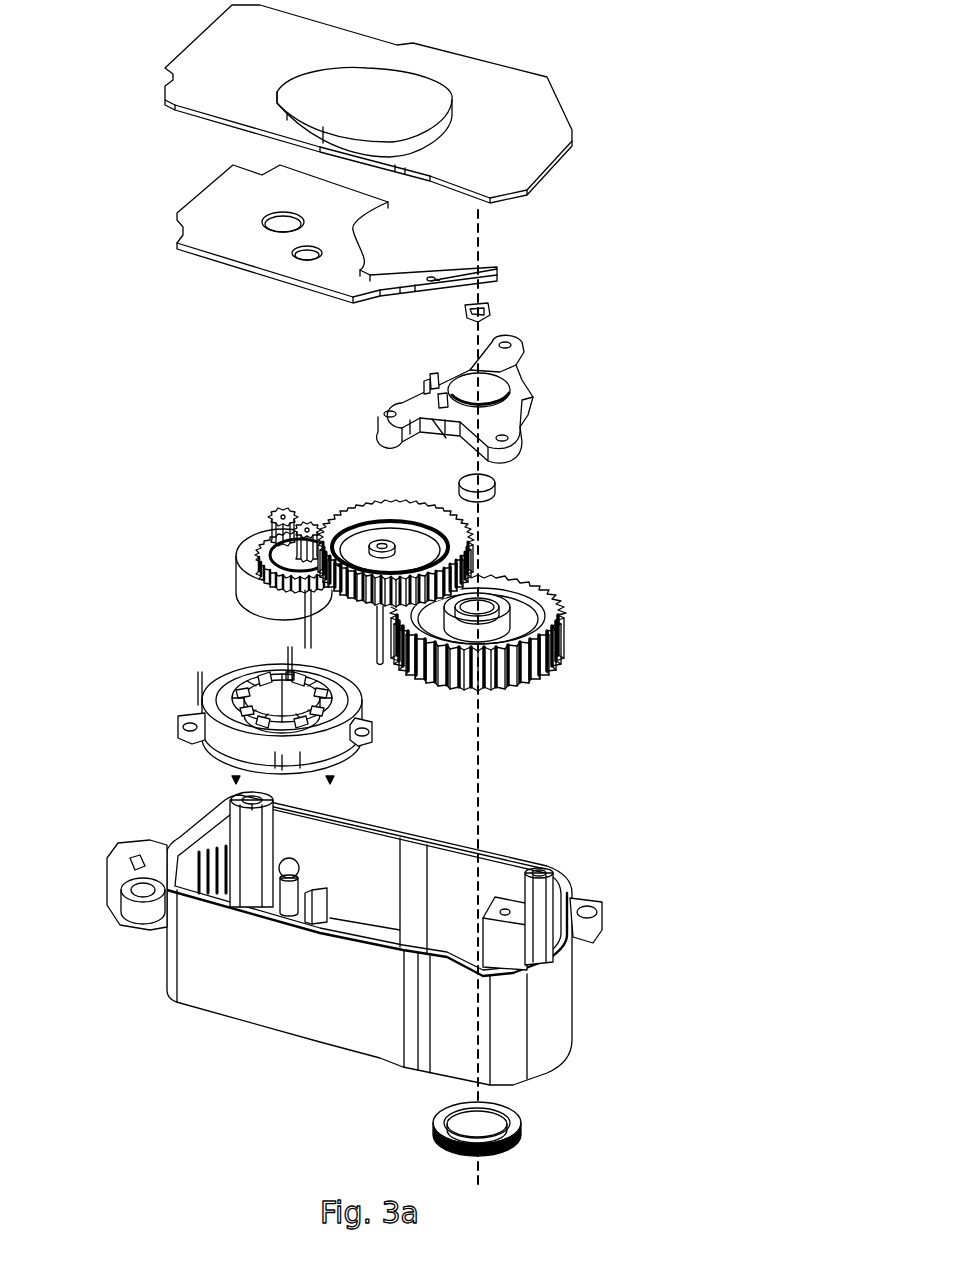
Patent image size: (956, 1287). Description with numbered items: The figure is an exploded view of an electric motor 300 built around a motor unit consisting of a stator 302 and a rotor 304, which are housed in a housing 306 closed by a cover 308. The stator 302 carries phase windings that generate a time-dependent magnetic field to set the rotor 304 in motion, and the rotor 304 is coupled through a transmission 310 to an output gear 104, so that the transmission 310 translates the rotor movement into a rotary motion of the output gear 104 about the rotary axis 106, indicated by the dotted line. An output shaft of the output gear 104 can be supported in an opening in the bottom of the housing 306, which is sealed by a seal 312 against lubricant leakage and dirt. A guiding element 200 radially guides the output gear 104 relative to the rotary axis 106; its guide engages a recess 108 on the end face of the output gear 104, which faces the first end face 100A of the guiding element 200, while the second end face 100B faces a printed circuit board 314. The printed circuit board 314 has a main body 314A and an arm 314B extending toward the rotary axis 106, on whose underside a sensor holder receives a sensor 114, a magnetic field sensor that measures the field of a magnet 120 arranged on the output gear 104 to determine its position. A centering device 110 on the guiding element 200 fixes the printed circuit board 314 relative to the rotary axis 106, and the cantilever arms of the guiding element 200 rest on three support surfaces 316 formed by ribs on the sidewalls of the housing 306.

The electric motor 300 is at (371, 595).
The cover 308 is at (600, 138).
The printed circuit board 314 is at (332, 234).
The main body 314A is at (207, 192).
The arm 314B is at (480, 267).
The sensor 114 is at (458, 317).
The guiding element 200 is at (496, 417).
The second end face 100B is at (520, 393).
The first end face 100A is at (427, 434).
The centering device 110 is at (420, 382).
The magnet 120 is at (497, 490).
The transmission 310 is at (399, 561).
The rotor 304 is at (233, 578).
The output gear 104 is at (523, 611).
The recess 108 is at (522, 598).
The stator 302 is at (162, 712).
The housing 306 is at (406, 938).
The support surfaces 316 is at (508, 903).
The rotary axis 106 is at (480, 780).
The seal 312 is at (525, 1122).